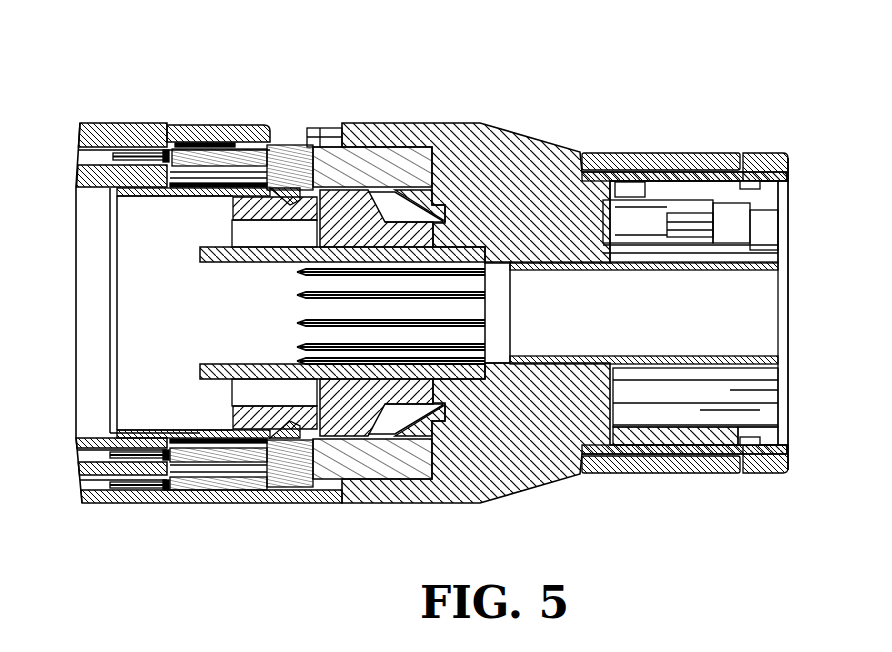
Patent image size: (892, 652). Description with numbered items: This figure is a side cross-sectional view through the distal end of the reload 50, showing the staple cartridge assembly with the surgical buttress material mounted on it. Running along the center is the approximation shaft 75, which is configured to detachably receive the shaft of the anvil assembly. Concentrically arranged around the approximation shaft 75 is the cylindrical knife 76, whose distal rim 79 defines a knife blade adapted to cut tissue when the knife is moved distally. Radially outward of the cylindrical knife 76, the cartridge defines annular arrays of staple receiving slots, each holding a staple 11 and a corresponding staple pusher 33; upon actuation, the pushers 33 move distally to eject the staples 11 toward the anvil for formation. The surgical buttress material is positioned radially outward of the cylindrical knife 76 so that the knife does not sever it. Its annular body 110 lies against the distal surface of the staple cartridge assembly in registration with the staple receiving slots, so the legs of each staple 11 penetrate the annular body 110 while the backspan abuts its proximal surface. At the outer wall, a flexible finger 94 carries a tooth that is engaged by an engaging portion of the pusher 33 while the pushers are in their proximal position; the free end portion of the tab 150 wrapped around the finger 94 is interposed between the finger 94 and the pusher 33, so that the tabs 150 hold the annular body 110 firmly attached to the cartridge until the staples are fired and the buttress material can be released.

The reload 50 is at (519, 107).
The annular body 110 is at (78, 158).
The tab 150 is at (103, 123).
The staple 11 is at (133, 156).
The finger 94 is at (215, 125).
The staple pusher 33 is at (280, 155).
The approximation shaft 75 is at (312, 235).
The cylindrical knife 76 is at (132, 242).
The distal rim 79 is at (112, 313).